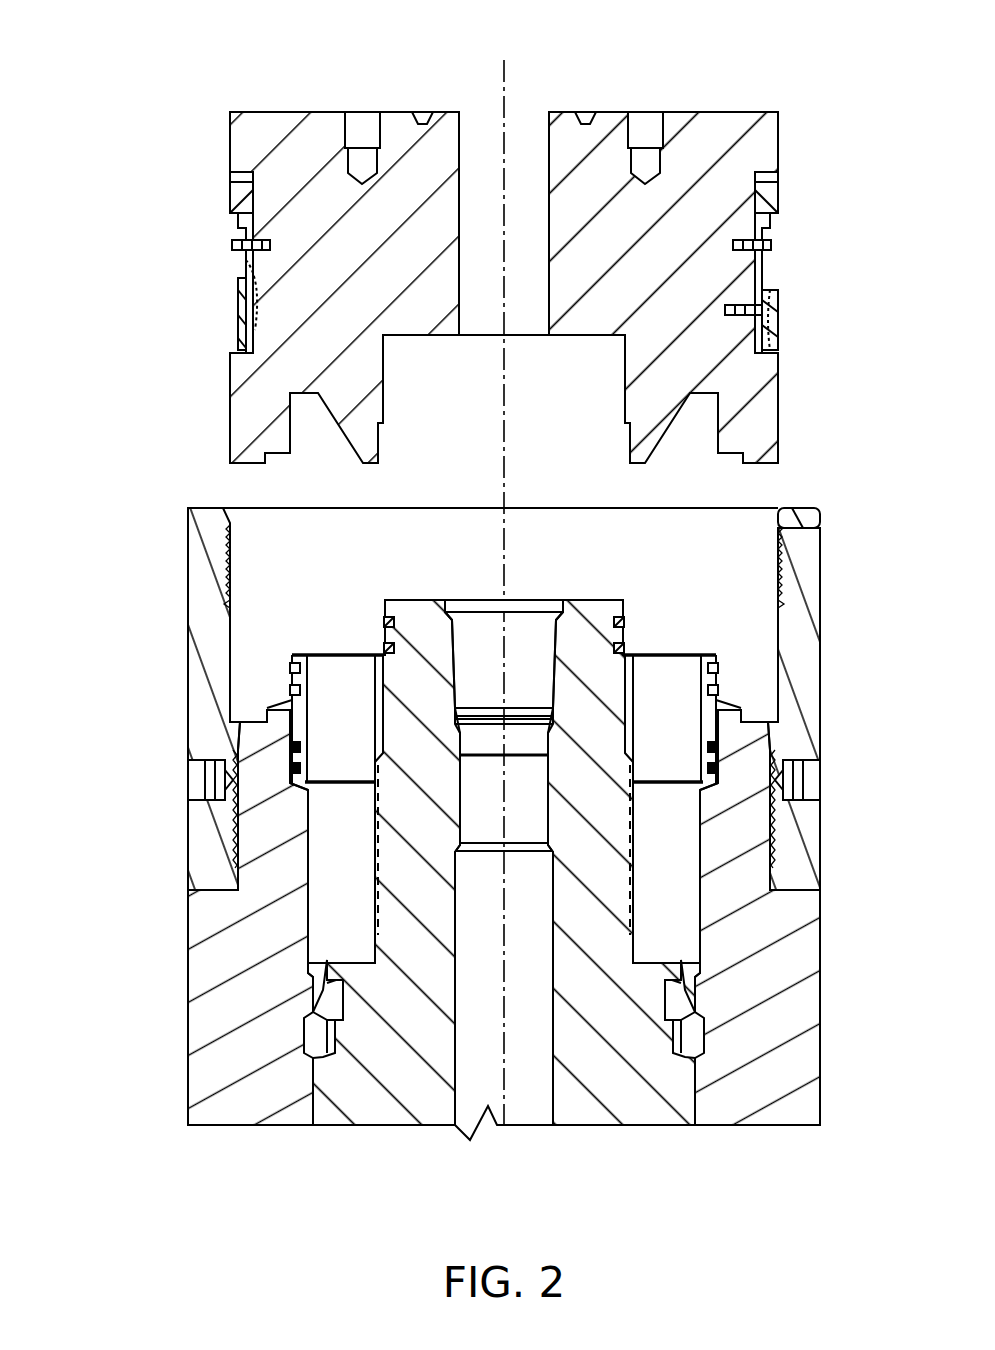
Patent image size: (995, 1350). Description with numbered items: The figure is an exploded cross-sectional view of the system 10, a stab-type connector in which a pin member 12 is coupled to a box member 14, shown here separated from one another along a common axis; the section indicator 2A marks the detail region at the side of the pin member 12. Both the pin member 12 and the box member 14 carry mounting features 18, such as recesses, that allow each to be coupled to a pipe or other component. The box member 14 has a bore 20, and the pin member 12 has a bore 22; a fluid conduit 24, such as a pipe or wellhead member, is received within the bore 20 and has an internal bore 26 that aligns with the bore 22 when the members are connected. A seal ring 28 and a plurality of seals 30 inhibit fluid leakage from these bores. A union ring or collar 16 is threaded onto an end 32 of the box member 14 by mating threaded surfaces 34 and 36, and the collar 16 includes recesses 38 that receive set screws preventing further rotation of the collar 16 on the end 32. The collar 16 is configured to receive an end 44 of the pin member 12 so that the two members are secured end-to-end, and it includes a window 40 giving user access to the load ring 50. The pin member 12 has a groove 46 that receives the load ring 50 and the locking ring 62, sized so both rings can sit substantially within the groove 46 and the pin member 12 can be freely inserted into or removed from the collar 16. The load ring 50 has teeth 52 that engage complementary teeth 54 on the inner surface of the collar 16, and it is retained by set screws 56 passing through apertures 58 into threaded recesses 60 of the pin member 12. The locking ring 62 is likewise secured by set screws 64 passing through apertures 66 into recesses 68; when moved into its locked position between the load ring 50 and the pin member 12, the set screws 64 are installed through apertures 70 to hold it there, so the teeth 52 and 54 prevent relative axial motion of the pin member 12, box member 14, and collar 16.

The system 10 is at (208, 50).
The pin member 12 is at (245, 150).
The box member 14 is at (212, 1025).
The collar 16 is at (188, 712).
The mounting features 18 is at (658, 114).
The bore 20 is at (310, 862).
The bore 22 is at (470, 135).
The fluid conduit 24 is at (380, 1112).
The internal bore 26 is at (547, 1095).
The seal ring 28 is at (300, 722).
The seals 30 is at (386, 648).
The end 32 is at (248, 855).
The threaded surface 34 is at (232, 818).
The threaded surface 36 is at (292, 872).
The recesses 38 is at (196, 790).
The window 40 is at (808, 526).
The end 44 is at (760, 430).
The groove 46 is at (752, 195).
The load ring 50 is at (240, 336).
The teeth 52 is at (232, 286).
The teeth 54 is at (778, 572).
The set screws 56 is at (778, 308).
The apertures 58 is at (775, 290).
The threaded recesses 60 is at (732, 310).
The locking ring 62 is at (236, 210).
The set screws 64 is at (236, 246).
The apertures 66 is at (238, 262).
The recesses 68 is at (240, 302).
The apertures 70 is at (768, 180).
The section view indicator 2A is at (790, 303).